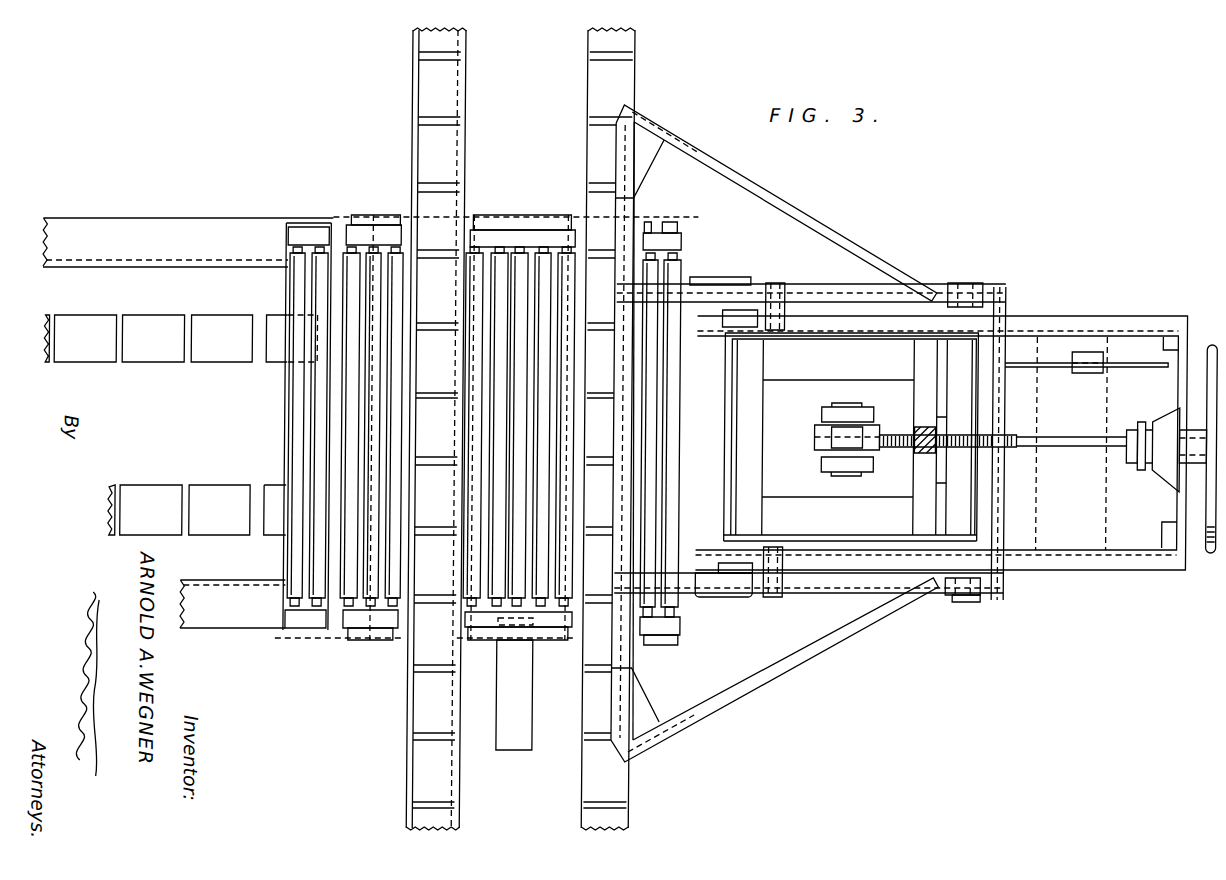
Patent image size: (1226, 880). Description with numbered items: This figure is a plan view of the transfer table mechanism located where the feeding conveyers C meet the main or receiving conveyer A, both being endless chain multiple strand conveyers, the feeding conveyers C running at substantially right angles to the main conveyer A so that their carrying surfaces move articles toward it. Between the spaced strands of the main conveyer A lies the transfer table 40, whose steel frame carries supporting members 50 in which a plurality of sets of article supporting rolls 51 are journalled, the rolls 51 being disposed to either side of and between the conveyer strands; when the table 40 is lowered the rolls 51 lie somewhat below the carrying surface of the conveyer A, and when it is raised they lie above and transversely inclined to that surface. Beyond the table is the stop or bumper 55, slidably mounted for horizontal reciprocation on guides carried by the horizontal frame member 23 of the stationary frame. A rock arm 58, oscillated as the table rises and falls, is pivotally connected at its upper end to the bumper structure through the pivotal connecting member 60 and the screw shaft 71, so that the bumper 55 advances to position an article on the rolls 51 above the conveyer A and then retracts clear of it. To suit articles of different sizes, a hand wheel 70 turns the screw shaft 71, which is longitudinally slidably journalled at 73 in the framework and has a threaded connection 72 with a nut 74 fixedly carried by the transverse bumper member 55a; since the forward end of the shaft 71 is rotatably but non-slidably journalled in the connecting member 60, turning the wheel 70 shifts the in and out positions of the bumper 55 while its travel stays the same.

The main or receiving conveyer A is at (452, 98).
The feeding conveyer C is at (144, 326).
The horizontal frame member 23 is at (1073, 317).
The transfer table 40 is at (392, 648).
The supporting members 50 is at (362, 228).
The article supporting rolls 51 is at (543, 272).
The stop or bumper 55 is at (842, 335).
The transverse bumper member 55a is at (912, 523).
The rock arm 58 is at (823, 462).
The pivotal connecting member 60 is at (847, 437).
The hand wheel 70 is at (1208, 387).
The screw shaft 71 is at (1062, 443).
The threaded connection 72 is at (902, 432).
The journal 73 is at (1168, 457).
The nut 74 is at (923, 452).